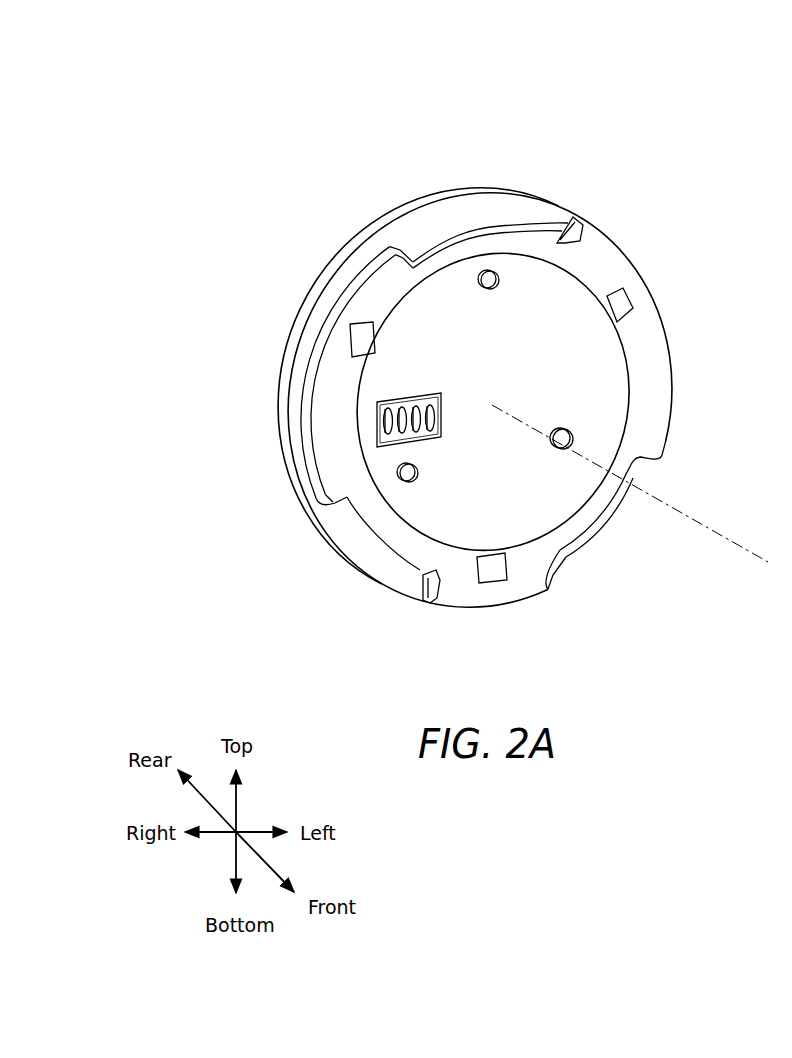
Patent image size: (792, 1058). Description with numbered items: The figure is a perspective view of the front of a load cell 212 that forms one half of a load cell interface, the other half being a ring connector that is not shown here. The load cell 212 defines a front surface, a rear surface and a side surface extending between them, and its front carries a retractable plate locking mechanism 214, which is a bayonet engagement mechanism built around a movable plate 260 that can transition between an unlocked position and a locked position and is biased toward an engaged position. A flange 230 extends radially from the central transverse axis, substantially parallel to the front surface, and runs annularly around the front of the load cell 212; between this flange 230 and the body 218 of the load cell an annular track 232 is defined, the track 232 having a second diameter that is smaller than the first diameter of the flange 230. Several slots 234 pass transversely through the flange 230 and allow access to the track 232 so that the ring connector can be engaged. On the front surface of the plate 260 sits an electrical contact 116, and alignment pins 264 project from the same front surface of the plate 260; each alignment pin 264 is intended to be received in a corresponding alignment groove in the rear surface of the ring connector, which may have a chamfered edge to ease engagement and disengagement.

The load cell 212 is at (371, 116).
The retractable plate locking mechanism 214 is at (340, 205).
The electrical contact 116 is at (410, 393).
The body 218 is at (278, 410).
The flange 230 is at (310, 424).
The track 232 is at (304, 469).
The slots 234 is at (457, 220).
The plate 260 is at (567, 310).
The alignment pins 264 is at (492, 280).